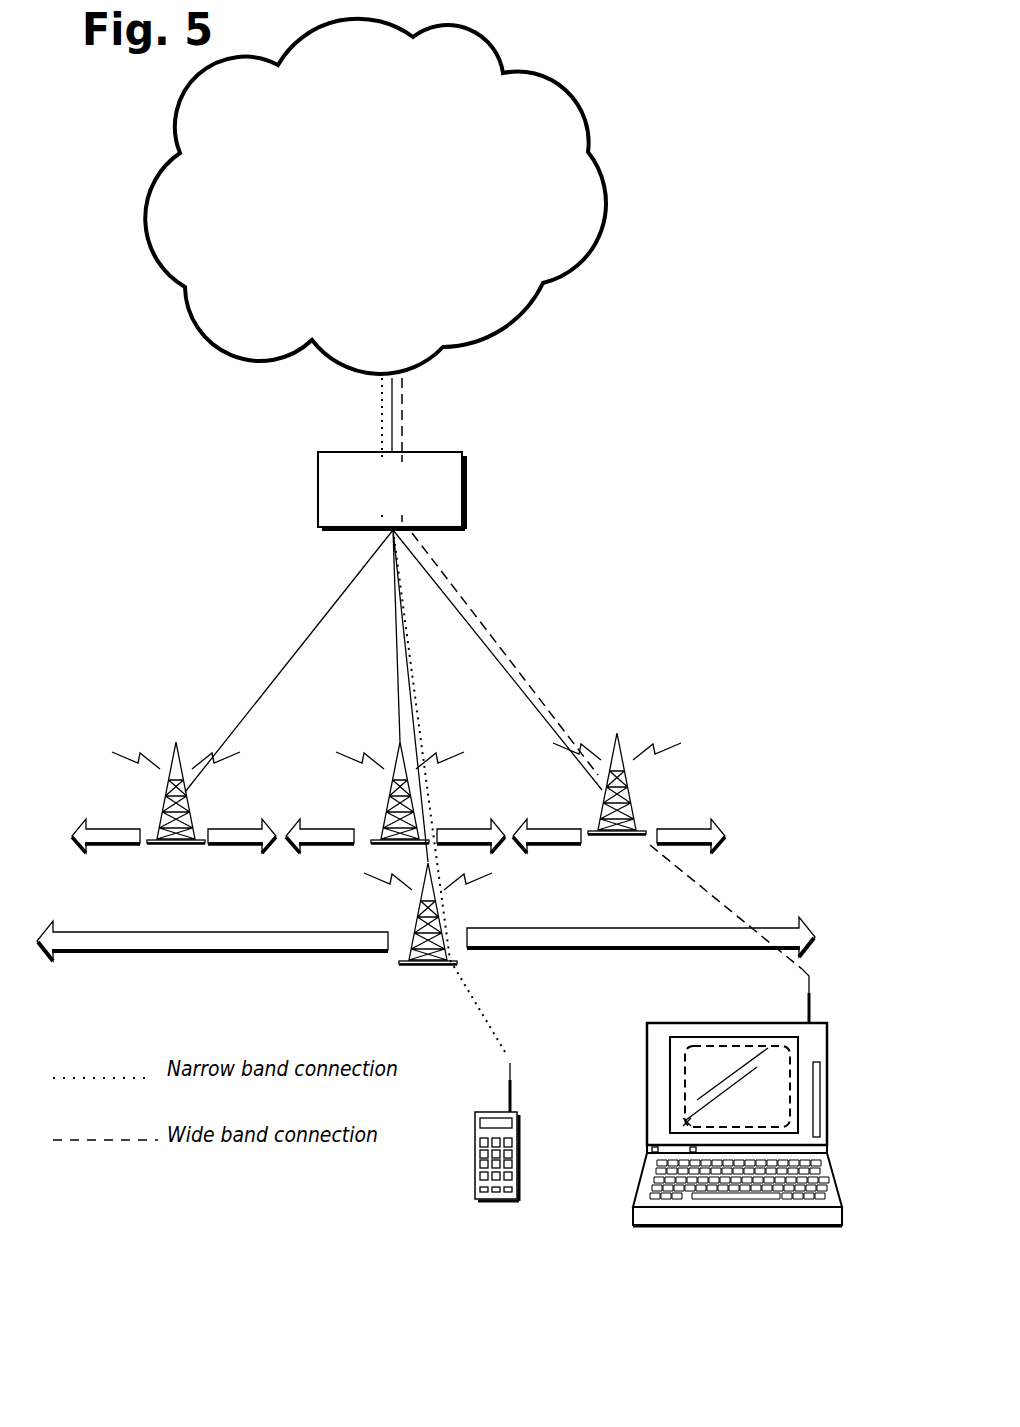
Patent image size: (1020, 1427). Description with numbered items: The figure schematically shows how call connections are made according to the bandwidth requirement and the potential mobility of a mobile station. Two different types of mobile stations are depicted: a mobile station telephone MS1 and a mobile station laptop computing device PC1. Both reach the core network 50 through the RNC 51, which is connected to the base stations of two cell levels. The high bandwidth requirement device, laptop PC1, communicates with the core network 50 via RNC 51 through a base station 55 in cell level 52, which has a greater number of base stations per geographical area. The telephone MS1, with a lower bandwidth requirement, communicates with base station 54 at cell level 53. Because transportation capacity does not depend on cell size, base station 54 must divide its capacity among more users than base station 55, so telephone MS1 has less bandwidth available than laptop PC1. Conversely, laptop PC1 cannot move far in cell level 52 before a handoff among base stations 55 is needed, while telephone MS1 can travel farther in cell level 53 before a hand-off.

The core network 50 is at (588, 152).
The RNC 51 is at (463, 477).
The cell level 52 is at (462, 836).
The cell level 53 is at (488, 939).
The base station 54 is at (402, 950).
The base station 55 is at (150, 851).
The mobile station telephone MS1 is at (512, 1199).
The mobile station laptop computing device PC1 is at (820, 1225).